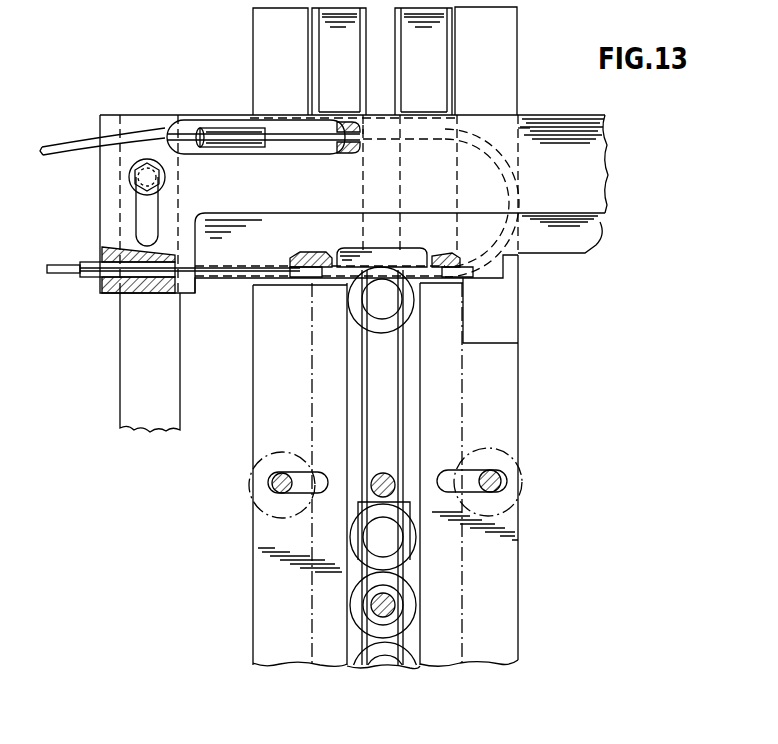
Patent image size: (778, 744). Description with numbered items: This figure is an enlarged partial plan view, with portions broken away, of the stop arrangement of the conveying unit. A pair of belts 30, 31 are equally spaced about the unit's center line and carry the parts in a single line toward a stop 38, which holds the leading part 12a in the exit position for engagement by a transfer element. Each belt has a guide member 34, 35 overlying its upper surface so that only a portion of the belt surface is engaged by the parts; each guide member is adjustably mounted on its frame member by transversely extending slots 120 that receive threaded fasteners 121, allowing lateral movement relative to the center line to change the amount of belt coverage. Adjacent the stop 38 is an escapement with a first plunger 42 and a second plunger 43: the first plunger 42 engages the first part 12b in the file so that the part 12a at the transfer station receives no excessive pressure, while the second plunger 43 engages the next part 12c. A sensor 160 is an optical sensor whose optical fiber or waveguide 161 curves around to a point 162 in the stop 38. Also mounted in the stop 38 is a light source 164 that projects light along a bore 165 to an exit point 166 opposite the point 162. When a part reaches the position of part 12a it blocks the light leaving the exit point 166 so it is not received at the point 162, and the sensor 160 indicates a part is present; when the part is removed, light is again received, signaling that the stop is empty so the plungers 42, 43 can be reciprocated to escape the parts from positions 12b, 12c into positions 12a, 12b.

The leading part 12a is at (403, 318).
The first or leading part in the single file 12b is at (408, 537).
The next part 12c is at (410, 604).
The belt 30 is at (440, 83).
The belt 31 is at (352, 80).
The guide member 34 is at (521, 376).
The guide member 35 is at (265, 420).
The stop 38 is at (549, 137).
The first plunger 42 is at (393, 477).
The second plunger 43 is at (366, 611).
The transversely extending slot 120 is at (320, 474).
The threaded fastener 121 is at (276, 490).
The sensor 160 is at (222, 133).
The optical fiber or waveguide 161 is at (296, 124).
The point 162 is at (435, 270).
The light source 164 is at (100, 288).
The bore 165 is at (305, 270).
The exit point 166 is at (342, 268).